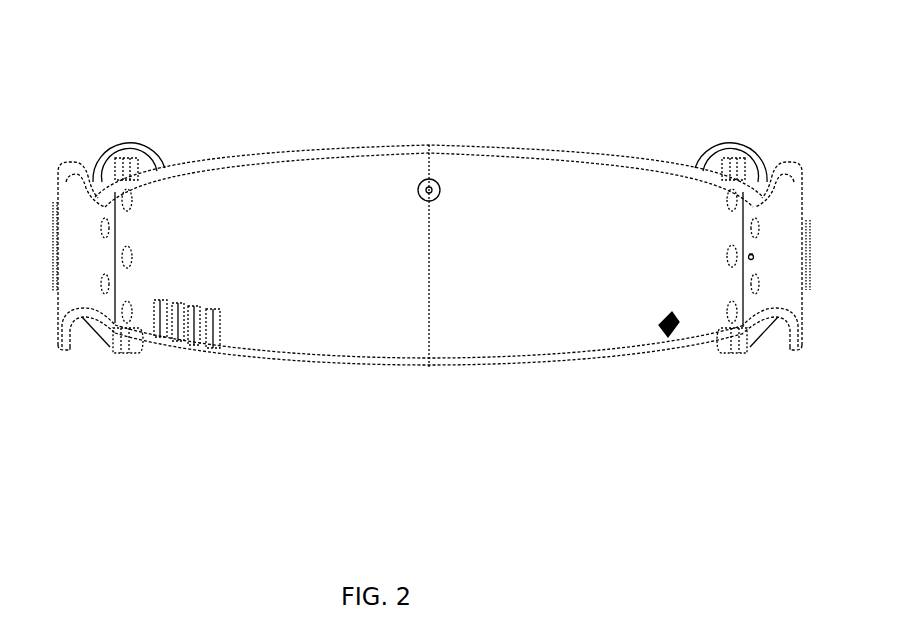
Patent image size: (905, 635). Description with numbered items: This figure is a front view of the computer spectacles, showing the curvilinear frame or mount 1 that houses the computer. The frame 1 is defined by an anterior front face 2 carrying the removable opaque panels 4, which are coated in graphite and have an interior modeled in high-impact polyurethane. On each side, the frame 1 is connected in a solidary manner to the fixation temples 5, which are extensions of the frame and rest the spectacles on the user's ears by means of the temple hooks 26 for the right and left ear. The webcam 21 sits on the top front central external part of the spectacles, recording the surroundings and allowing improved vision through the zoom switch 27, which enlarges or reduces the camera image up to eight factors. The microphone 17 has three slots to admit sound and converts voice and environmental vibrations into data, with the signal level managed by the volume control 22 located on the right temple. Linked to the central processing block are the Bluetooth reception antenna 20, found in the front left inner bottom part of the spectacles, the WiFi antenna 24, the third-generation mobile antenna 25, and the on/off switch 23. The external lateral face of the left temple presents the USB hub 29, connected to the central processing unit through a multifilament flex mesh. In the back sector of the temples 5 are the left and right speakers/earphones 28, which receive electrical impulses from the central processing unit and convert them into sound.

The frame or mount 1 is at (292, 150).
The front face 2 is at (430, 250).
The removable opaque panels 4 is at (322, 337).
The temples 5 is at (75, 273).
The microphone 17 is at (672, 337).
The Bluetooth reception antenna 20 is at (218, 350).
The webcam 21 is at (438, 197).
The volume control 22 is at (52, 233).
The on/off switch 23 is at (159, 340).
The WiFi antenna 24 is at (177, 343).
The 3G antenna 25 is at (195, 347).
The temple hooks 26 is at (130, 142).
The zoom switch 27 is at (811, 233).
The speaker/earphone 28 is at (129, 355).
The USB hub 29 is at (755, 256).